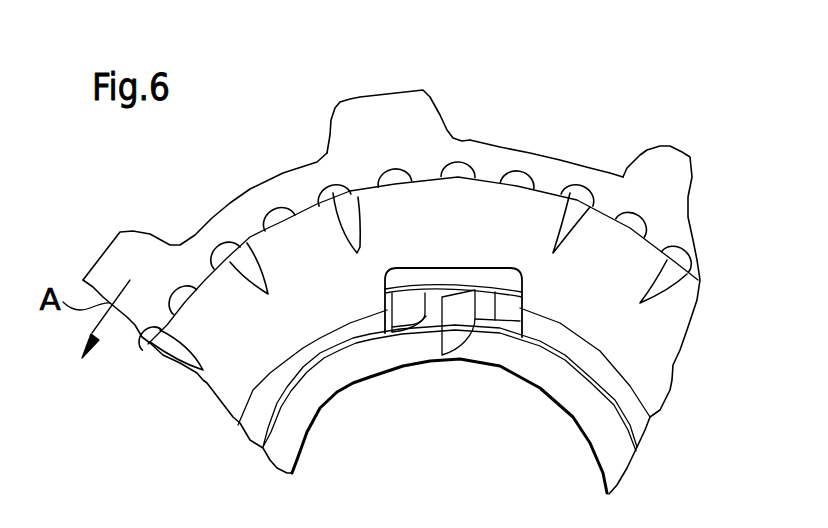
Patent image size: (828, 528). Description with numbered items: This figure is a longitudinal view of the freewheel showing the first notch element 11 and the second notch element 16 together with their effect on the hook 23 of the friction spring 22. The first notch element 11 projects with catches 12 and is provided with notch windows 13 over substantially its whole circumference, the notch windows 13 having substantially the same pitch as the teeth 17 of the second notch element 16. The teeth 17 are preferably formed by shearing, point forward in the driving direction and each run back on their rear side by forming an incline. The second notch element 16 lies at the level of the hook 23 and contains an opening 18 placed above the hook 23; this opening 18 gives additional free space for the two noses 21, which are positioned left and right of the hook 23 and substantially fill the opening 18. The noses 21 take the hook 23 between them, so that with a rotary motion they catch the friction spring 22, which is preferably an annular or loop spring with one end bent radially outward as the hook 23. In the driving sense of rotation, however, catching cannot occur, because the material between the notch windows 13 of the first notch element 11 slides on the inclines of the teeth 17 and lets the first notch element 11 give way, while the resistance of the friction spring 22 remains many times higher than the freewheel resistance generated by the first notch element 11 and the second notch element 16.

The first notch element 11 is at (622, 190).
The catches 12 is at (377, 110).
The notch windows 13 is at (460, 163).
The second notch element 16 is at (532, 210).
The teeth 17 is at (560, 222).
The opening 18 is at (490, 272).
The noses 21 is at (393, 318).
The friction spring 22 is at (558, 380).
The hook 23 is at (457, 305).